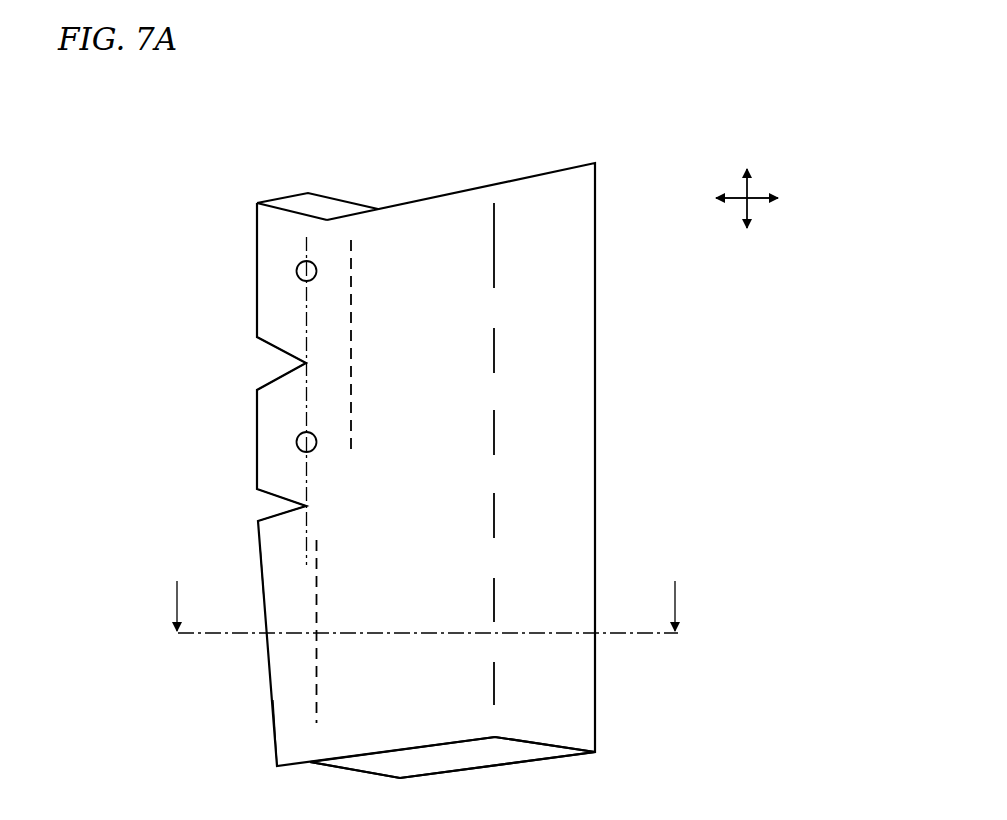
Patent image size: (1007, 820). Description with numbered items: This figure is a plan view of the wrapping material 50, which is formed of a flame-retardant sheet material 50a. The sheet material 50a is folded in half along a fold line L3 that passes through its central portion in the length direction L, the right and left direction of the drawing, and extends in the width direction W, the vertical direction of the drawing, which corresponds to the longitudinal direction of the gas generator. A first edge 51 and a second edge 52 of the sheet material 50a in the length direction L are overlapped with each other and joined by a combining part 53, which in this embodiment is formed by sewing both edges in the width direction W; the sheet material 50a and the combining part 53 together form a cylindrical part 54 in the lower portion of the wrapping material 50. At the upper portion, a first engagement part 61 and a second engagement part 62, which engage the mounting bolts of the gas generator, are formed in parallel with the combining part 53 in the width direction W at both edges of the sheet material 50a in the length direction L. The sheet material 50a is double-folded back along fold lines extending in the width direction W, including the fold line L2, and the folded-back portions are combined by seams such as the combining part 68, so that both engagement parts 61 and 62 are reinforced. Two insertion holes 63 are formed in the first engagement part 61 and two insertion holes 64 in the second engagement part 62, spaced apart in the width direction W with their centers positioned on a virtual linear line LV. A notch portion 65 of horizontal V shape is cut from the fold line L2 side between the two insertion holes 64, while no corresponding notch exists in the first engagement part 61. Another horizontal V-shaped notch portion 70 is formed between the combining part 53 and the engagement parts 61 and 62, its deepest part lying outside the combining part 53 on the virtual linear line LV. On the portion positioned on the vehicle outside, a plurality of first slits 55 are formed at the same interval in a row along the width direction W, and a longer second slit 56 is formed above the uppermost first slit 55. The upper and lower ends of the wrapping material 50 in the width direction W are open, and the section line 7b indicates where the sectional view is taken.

The wrapping material 50 is at (601, 157).
The flame-retardant sheet material 50a is at (580, 323).
The first edge 51 is at (284, 712).
The second edge 52 is at (276, 573).
The combining part 53 is at (316, 666).
The cylindrical part 54 is at (372, 706).
The first slit 55 is at (494, 350).
The second slit 56 is at (494, 245).
The first engagement part 61 is at (268, 246).
The second engagement part 62 is at (263, 217).
The insertion holes 63 is at (307, 356).
The insertion holes 64 is at (297, 275).
The notch portion 65 is at (268, 378).
The combining part 68 is at (352, 262).
The notch portion 70 is at (274, 514).
The fold line L2 is at (254, 404).
The fold line L3 is at (597, 193).
The virtual linear line LV is at (308, 240).
The line 7b- 7b is at (427, 593).
The length direction L is at (757, 190).
The width direction W is at (750, 207).